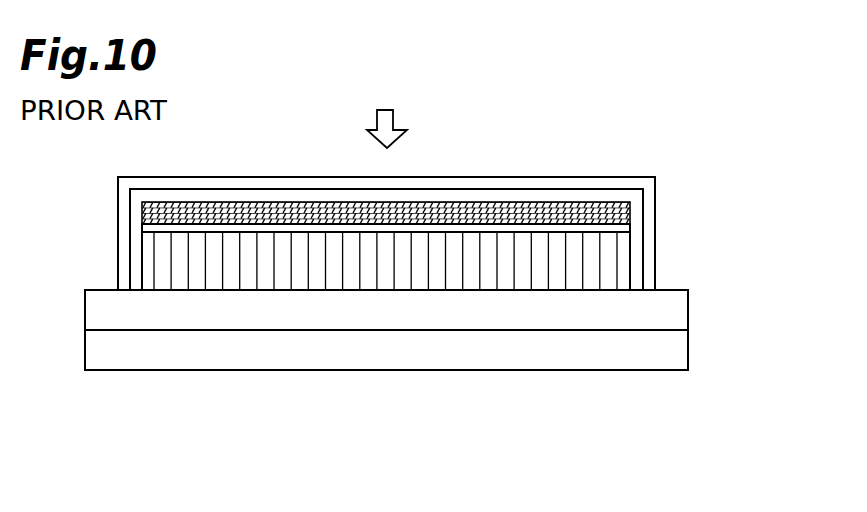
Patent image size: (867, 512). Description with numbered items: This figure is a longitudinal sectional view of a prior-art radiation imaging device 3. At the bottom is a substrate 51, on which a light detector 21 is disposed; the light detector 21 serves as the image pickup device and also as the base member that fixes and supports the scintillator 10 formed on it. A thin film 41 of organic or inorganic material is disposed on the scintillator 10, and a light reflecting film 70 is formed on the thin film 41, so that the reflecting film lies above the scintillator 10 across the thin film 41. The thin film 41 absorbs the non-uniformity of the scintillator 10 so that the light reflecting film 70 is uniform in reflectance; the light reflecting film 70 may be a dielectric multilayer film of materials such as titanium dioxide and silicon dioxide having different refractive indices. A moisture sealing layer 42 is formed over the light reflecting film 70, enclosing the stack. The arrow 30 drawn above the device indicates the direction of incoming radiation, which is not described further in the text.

The radiation imaging device 3 is at (648, 398).
The scintillator 10 is at (622, 269).
The light detector 21 is at (677, 314).
The incident light 30 is at (387, 111).
The thin film 41 is at (622, 230).
The moisture sealing layer 42 is at (598, 198).
The substrate 51 is at (677, 353).
The light reflecting film 70 is at (532, 203).